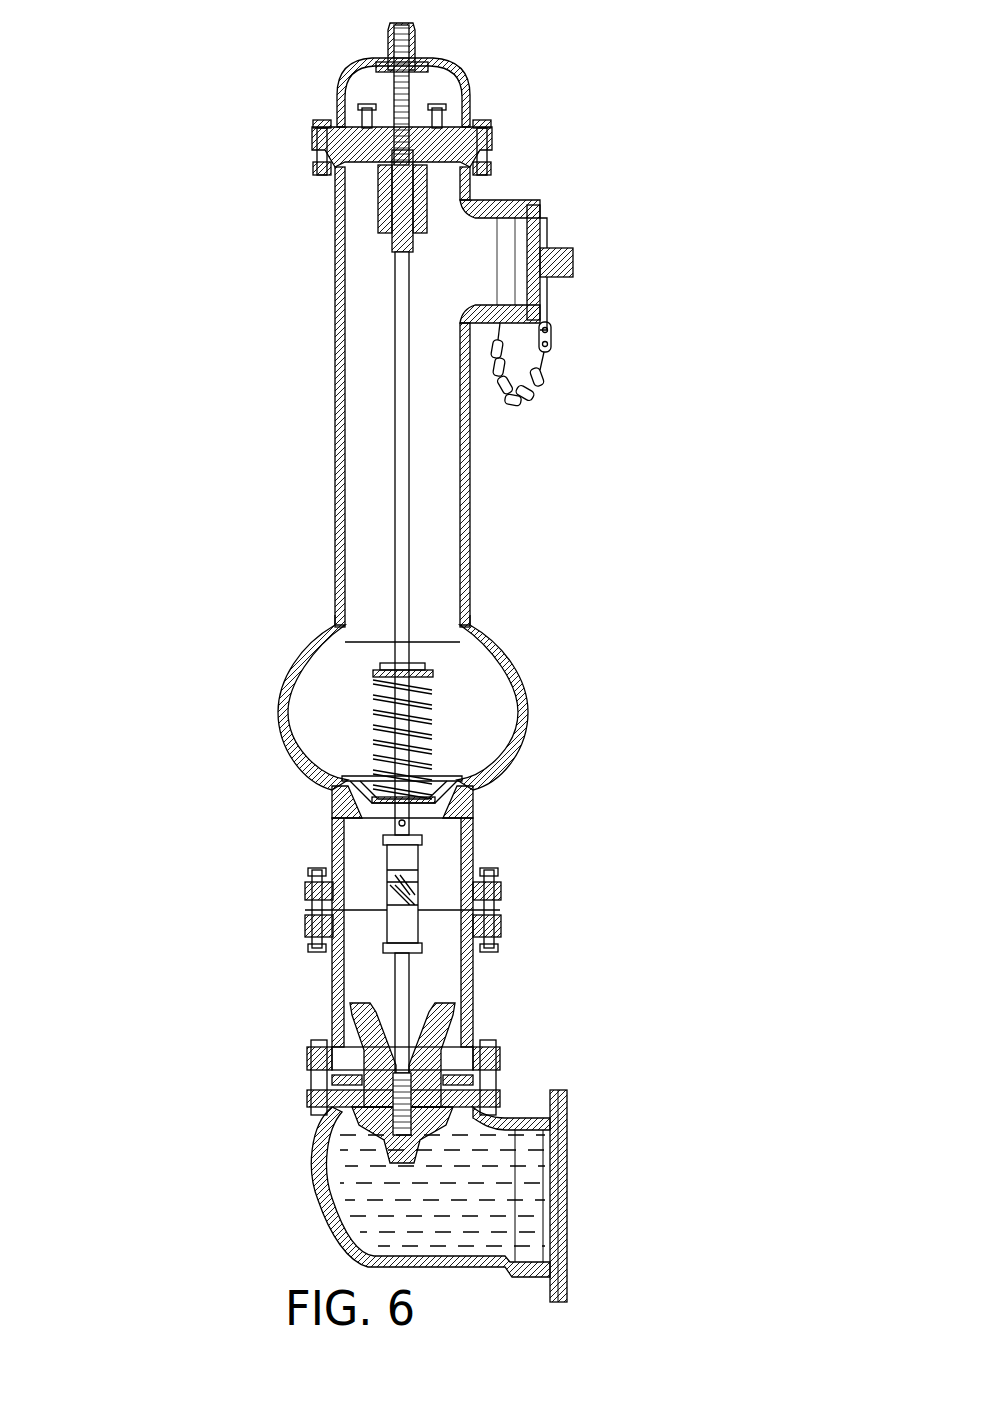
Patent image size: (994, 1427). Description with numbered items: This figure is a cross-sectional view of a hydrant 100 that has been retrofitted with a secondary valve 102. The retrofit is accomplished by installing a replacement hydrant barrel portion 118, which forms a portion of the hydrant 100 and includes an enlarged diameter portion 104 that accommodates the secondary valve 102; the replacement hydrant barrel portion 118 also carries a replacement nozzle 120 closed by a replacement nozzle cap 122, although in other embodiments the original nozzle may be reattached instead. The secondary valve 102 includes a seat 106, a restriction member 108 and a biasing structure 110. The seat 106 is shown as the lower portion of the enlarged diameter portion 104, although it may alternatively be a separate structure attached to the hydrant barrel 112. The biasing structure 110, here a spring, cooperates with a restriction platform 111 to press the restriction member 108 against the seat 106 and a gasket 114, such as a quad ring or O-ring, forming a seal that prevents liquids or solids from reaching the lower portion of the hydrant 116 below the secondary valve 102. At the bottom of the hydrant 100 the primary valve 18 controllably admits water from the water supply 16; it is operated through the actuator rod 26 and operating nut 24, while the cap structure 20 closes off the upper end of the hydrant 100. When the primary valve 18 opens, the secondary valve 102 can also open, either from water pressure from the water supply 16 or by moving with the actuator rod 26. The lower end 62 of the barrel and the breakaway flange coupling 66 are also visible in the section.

The hydrant 100 is at (684, 88).
The replacement hydrant barrel portion 118 is at (131, 142).
The operating nut 24 is at (386, 32).
The cap structure 20 is at (468, 83).
The actuator rod 26 is at (402, 378).
The hydrant barrel 112 is at (338, 262).
The replacement nozzle 120 is at (534, 210).
The replacement nozzle cap 122 is at (575, 264).
The enlarged diameter portion 104 is at (268, 693).
The barrel lower end 62 is at (472, 620).
The biasing structure 110 is at (376, 694).
The restriction platform 111 is at (432, 661).
The secondary valve 102 is at (448, 763).
The restriction member 108 is at (362, 737).
The gasket 114 is at (372, 792).
The seat 106 is at (462, 800).
The breakaway flange coupling 66 is at (300, 895).
The lower portion of the hydrant 116 is at (440, 972).
The primary valve 18 is at (452, 1052).
The water supply 16 is at (640, 1198).